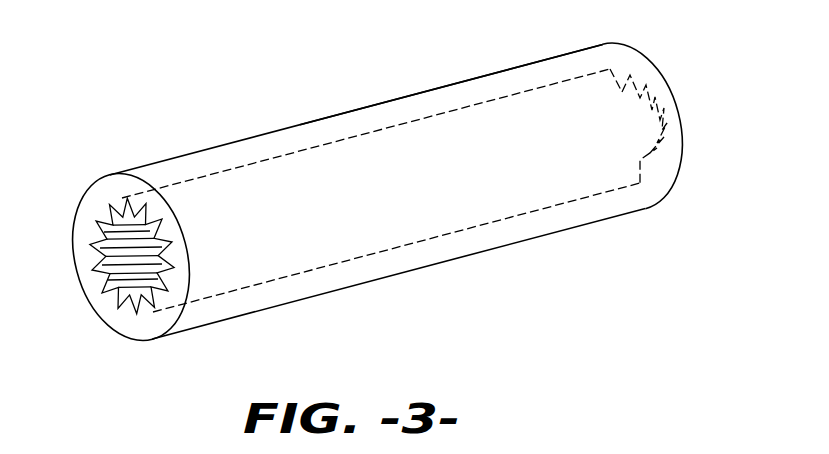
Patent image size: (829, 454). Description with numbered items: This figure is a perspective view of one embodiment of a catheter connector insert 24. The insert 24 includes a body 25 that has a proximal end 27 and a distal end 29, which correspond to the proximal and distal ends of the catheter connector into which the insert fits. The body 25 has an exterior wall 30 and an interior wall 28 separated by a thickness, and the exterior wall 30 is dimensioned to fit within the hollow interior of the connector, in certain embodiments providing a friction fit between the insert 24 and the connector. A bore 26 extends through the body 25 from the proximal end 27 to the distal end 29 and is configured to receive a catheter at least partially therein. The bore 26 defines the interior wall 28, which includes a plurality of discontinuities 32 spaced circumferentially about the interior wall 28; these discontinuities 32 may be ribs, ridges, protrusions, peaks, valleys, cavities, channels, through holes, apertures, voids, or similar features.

The insert 24 is at (115, 58).
The body 25 is at (320, 117).
The bore 26 is at (396, 195).
The proximal end 27 is at (90, 213).
The interior wall 28 is at (307, 270).
The distal end 29 is at (668, 82).
The exterior wall 30 is at (456, 83).
The discontinuity 32 is at (127, 298).